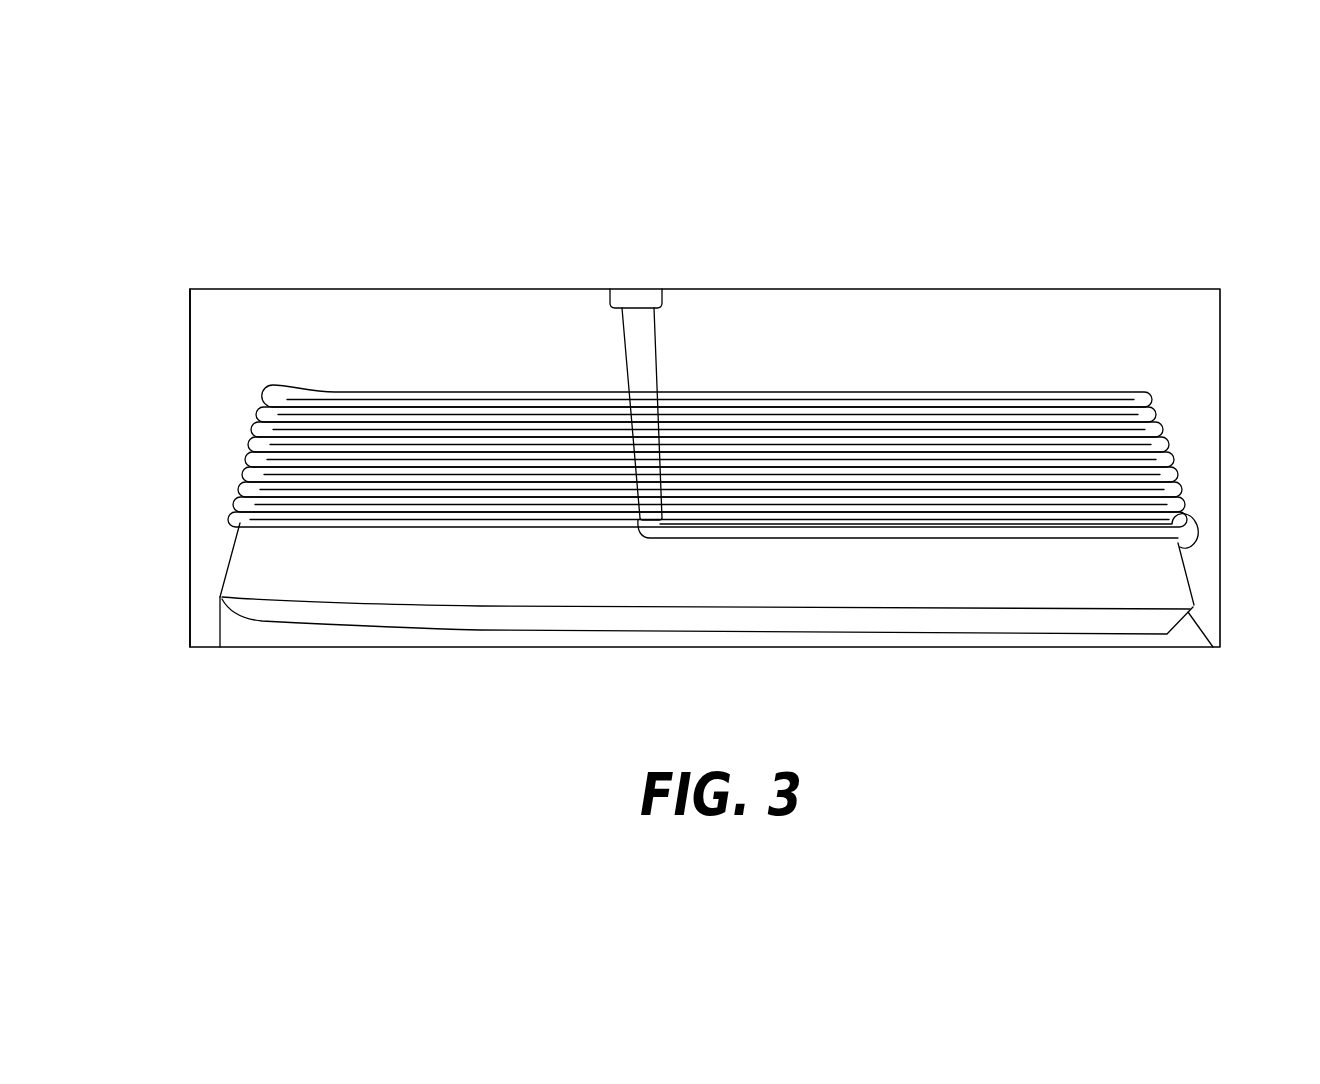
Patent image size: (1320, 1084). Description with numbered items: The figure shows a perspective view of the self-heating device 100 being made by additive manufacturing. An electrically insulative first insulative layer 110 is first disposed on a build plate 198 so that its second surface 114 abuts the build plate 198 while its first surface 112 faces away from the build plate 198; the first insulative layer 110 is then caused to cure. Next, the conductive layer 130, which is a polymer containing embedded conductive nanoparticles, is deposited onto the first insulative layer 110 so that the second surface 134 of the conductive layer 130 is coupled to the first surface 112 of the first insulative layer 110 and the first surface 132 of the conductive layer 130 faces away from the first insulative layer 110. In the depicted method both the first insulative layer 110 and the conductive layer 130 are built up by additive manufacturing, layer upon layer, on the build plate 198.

The self-heating device 100 is at (1133, 268).
The build plate 198 is at (207, 547).
The first insulative layer 110 is at (747, 624).
The first surface of the first insulative layer 112 is at (1133, 560).
The second surface of the first insulative layer 114 is at (1112, 607).
The conductive layer 130 is at (768, 445).
The first surface of the conductive layer 132 is at (1183, 497).
The second surface of the conductive layer 134 is at (1133, 538).